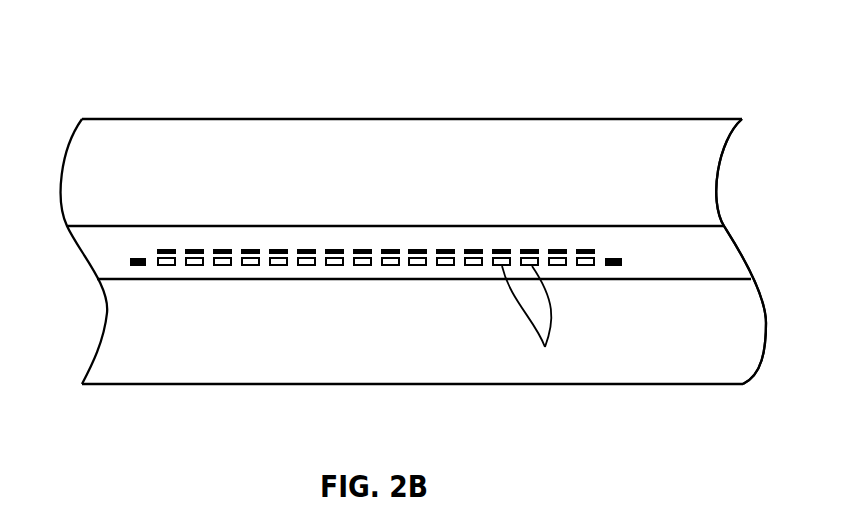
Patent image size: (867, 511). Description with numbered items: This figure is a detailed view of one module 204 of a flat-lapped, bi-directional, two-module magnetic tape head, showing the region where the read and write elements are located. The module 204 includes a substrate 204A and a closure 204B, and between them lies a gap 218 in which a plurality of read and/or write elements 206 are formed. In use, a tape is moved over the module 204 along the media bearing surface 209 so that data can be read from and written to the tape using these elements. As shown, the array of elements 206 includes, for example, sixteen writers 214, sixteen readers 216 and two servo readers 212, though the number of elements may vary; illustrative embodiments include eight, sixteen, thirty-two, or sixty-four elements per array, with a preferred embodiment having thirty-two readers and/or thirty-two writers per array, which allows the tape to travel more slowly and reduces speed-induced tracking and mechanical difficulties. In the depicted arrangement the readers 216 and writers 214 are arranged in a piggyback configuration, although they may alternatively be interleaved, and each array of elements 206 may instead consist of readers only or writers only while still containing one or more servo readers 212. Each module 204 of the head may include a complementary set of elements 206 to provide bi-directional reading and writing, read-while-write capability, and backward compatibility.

The module 204 is at (98, 99).
The substrate 204A is at (193, 119).
The closure 204B is at (250, 385).
The media bearing surface 209 is at (332, 190).
The elements 206 is at (638, 250).
The servo readers 212 is at (130, 261).
The writers 214 is at (501, 249).
The readers 216 is at (545, 347).
The gap 218 is at (742, 250).